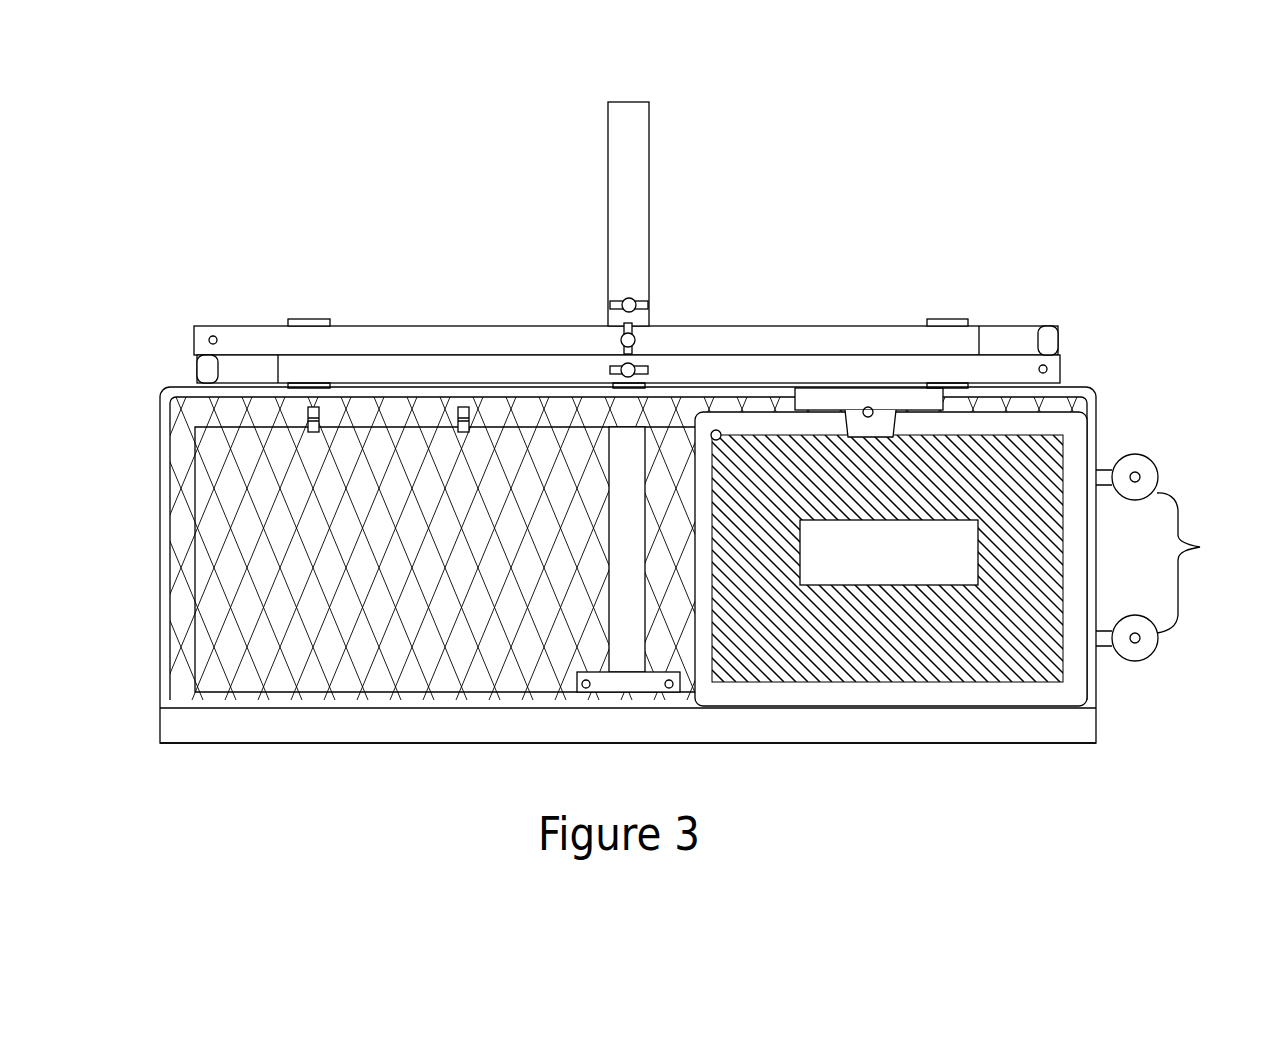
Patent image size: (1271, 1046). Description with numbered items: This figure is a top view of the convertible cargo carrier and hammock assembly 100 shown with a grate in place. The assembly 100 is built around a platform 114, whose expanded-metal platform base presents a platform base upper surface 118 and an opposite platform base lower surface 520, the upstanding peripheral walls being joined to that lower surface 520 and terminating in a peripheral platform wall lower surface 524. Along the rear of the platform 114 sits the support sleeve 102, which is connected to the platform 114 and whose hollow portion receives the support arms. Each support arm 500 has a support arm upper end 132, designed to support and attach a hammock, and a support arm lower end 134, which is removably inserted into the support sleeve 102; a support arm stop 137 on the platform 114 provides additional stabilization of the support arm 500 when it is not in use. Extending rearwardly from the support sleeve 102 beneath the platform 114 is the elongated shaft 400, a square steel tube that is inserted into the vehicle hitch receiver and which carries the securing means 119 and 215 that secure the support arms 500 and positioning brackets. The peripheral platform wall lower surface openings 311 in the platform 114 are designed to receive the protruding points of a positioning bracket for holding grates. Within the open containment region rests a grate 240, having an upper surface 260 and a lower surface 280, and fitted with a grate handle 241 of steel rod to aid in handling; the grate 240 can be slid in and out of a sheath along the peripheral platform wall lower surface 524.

The convertible cargo carrier and hammock assembly 100 is at (889, 147).
The support sleeve 102 is at (628, 430).
The platform 114 is at (193, 457).
The platform base upper surface 118 is at (626, 548).
The platform base lower surface 520 is at (260, 592).
The securing means 119 is at (650, 372).
The support arm upper end 132 is at (222, 332).
The support arm lower end 134 is at (208, 367).
The support arm stop 137 is at (313, 319).
The securing means 215 is at (633, 297).
The grate 240 is at (1067, 678).
The grate handle 241 is at (1169, 557).
The grate upper surface 260 is at (868, 618).
The grate lower surface 280 is at (875, 643).
The peripheral platform wall lower surface openings 311 is at (310, 407).
The elongated shaft 400 is at (636, 170).
The support arm 500 is at (832, 383).
The peripheral platform wall lower surface 524 is at (430, 407).